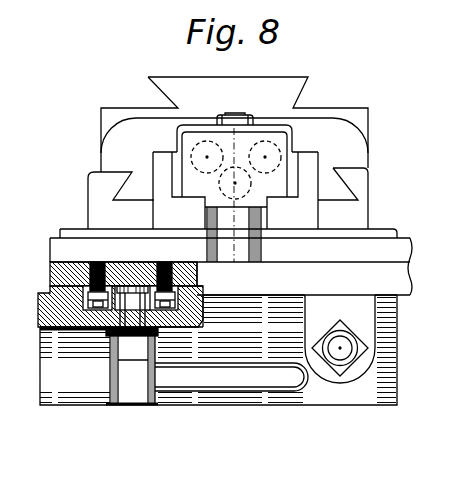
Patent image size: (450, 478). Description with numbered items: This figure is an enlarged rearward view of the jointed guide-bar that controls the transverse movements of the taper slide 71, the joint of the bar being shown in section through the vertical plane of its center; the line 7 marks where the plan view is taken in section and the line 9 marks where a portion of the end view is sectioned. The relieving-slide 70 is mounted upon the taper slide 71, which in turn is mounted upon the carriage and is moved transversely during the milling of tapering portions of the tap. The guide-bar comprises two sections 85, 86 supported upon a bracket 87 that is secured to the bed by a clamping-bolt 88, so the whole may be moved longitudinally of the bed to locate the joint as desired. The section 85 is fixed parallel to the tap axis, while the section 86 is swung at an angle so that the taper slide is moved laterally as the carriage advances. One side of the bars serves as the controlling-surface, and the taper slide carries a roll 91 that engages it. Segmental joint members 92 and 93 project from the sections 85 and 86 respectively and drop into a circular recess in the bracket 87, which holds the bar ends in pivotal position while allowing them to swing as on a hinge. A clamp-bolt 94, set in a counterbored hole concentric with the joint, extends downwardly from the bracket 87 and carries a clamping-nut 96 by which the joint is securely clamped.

The section line 7 7 is at (417, 152).
The section line 9 is at (410, 235).
The relieving-slide 70 is at (351, 108).
The taper slide 71 is at (268, 137).
The guide-bar section 85 is at (398, 255).
The guide-bar section 86 is at (68, 250).
The bracket 87 is at (327, 408).
The clamping-bolt 88 is at (350, 353).
The roll 91 is at (265, 250).
The segmental joint member 92 is at (198, 288).
The segmental joint member 93 is at (55, 298).
The clamp-bolt 94 is at (122, 284).
The clamping-nut 96 is at (128, 387).